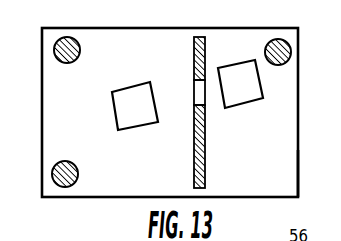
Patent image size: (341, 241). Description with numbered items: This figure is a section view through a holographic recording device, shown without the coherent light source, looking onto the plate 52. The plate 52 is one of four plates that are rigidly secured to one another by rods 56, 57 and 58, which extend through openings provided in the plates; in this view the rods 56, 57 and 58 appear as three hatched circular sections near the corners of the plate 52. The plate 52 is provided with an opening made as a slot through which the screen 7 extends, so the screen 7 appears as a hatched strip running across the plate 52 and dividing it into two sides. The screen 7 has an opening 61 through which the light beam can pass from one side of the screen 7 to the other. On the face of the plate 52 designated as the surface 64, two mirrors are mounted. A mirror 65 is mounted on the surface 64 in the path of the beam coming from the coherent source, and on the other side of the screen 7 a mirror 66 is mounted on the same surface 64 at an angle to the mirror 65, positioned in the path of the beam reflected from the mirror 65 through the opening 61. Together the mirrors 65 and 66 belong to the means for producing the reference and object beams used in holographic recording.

The plate 52 is at (298, 72).
The opening 61 is at (285, 174).
The rod 56 is at (286, 42).
The rod 57 is at (55, 49).
The rod 58 is at (52, 176).
The screen 7 is at (205, 163).
The surface 64 is at (192, 95).
The mirror 65 is at (228, 72).
The mirror 66 is at (126, 96).